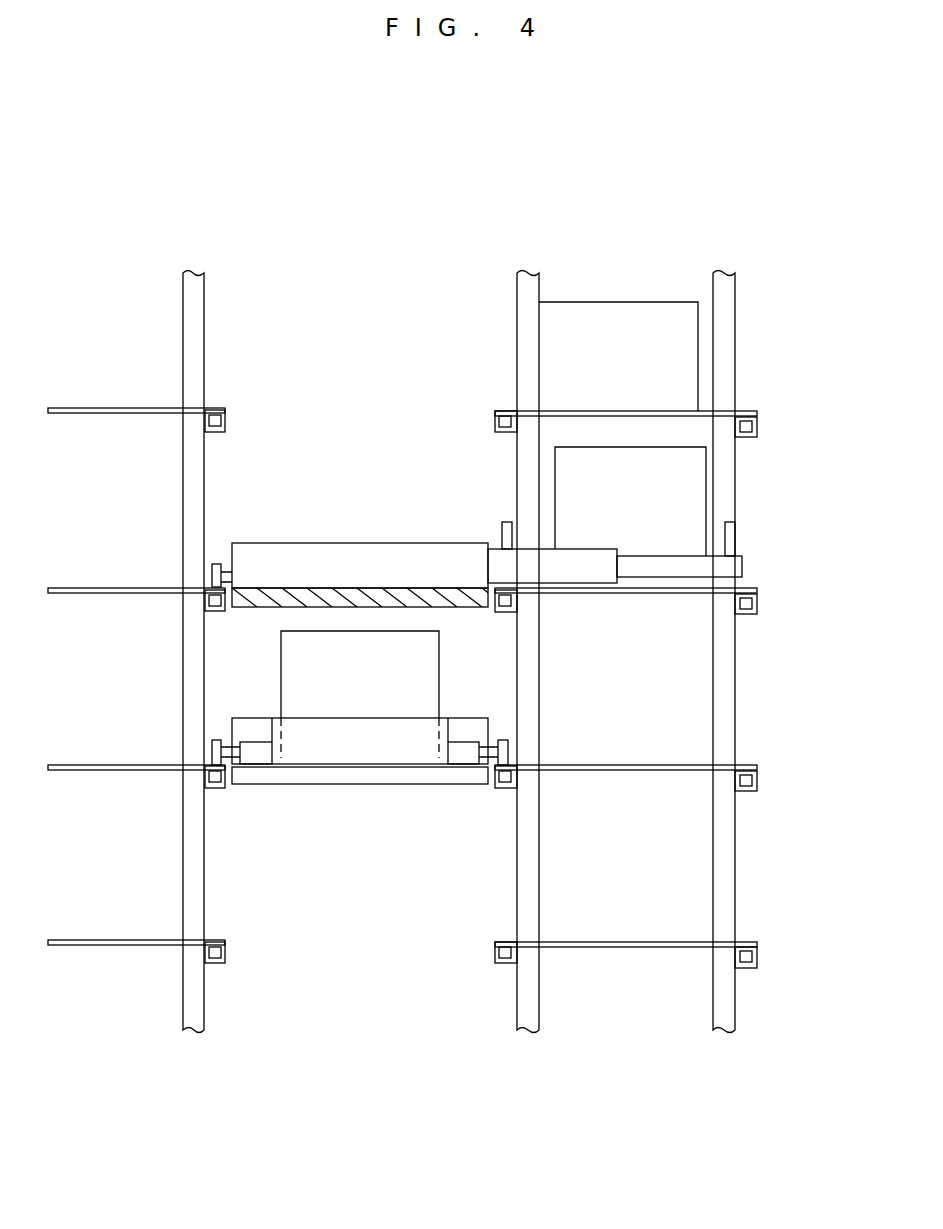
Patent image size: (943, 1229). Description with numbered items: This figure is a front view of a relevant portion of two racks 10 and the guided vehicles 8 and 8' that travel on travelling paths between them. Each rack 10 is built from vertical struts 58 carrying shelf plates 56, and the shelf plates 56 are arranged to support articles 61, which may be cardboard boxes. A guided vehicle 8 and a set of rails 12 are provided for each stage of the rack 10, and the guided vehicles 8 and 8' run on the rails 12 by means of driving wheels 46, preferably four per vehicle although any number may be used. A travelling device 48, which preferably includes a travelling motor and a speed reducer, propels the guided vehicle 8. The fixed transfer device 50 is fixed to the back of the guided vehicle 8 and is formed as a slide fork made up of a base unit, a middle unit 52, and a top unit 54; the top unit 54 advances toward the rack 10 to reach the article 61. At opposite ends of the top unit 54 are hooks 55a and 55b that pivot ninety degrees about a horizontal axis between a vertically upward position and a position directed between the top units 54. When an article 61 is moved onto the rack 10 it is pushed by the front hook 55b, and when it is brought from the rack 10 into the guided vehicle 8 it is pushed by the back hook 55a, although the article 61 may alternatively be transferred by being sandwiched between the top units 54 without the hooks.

The guided vehicle 8 is at (360, 807).
The guided vehicle 8' is at (357, 624).
The rack 10 is at (123, 1078).
The rail 12 is at (500, 411).
The driving wheel 46 is at (218, 562).
The travelling device 48 is at (320, 753).
The fixed transfer device 50 is at (325, 553).
The middle unit 52 is at (575, 570).
The top unit 54 is at (645, 563).
The hook 55a is at (741, 538).
The hook 55b is at (504, 527).
The shelf plate 56 is at (612, 411).
The strut 58 is at (185, 868).
The article 61 is at (618, 308).